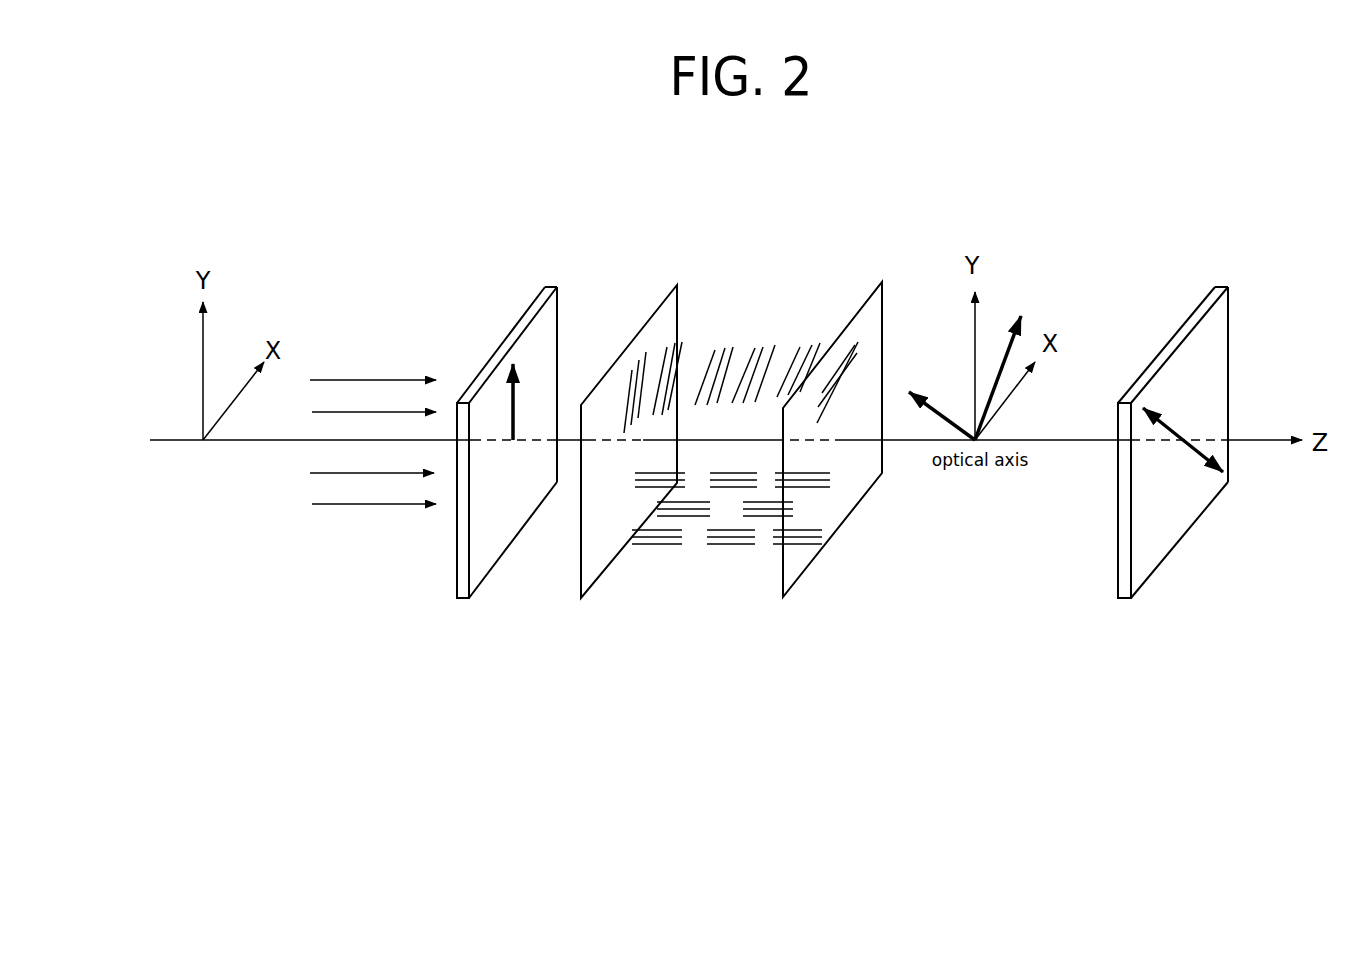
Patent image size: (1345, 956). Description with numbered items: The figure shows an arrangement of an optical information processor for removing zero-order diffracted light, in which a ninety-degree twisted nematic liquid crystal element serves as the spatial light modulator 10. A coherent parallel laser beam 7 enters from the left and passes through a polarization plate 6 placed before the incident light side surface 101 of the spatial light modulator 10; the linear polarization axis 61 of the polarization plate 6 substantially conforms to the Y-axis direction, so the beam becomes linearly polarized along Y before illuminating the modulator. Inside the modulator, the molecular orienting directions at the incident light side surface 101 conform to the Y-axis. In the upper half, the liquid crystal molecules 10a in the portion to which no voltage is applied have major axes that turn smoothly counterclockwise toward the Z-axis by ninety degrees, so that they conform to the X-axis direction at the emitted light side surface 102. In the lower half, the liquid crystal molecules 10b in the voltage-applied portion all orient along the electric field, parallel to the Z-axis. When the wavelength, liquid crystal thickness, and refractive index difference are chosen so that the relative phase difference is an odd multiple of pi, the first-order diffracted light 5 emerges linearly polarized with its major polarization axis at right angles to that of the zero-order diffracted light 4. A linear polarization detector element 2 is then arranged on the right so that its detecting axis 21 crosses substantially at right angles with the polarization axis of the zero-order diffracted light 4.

The parallel laser beam 7 is at (373, 362).
The polarization plate 6 is at (547, 330).
The linear polarization axis 61 is at (508, 387).
The spatial light modulator 10 is at (880, 276).
The liquid crystal molecules 10a is at (753, 338).
The liquid crystal molecules 10b is at (711, 554).
The incident light side surface 101 is at (592, 563).
The emitted light side surface 102 is at (833, 517).
The zero-order diffracted light 4 is at (1030, 319).
The first-order diffracted light 5 is at (945, 402).
The linear polarization detector element 2 is at (1210, 352).
The detecting axis 21 is at (1172, 423).